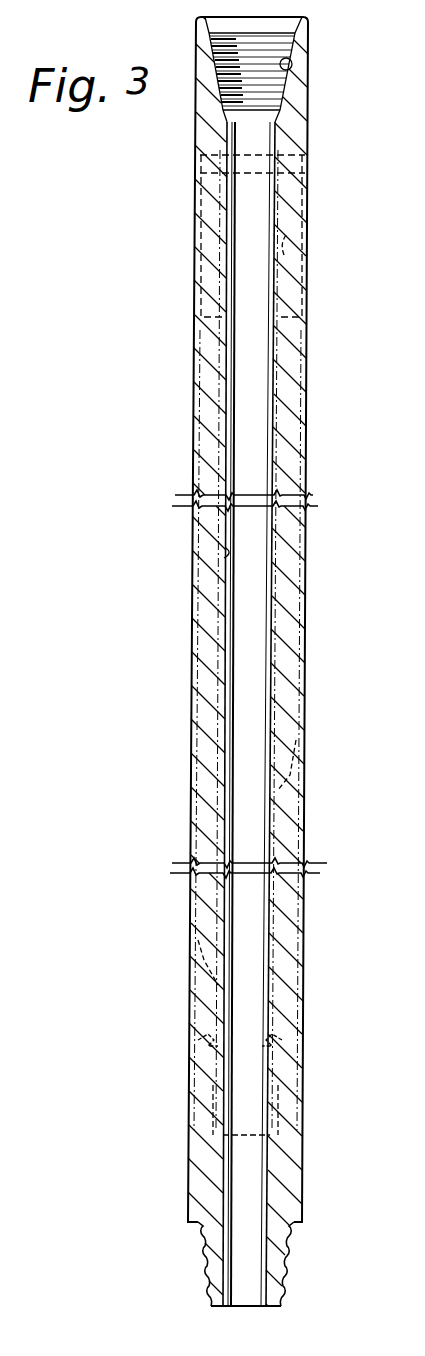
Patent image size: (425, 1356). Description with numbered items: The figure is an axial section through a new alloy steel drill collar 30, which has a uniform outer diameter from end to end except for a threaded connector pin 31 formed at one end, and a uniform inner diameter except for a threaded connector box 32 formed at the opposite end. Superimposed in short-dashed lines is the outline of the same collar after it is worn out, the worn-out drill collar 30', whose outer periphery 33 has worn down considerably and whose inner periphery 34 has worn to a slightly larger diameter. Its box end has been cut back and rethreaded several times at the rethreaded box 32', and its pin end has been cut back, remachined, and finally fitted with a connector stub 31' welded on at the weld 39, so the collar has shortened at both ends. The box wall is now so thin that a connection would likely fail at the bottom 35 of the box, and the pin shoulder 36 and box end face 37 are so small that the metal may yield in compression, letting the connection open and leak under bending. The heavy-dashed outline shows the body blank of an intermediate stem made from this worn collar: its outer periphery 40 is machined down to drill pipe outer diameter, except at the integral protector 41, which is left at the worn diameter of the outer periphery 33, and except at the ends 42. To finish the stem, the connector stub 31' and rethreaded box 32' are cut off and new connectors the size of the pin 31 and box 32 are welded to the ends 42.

The drill collar 30 is at (277, 619).
The worn-out drill collar 30' is at (331, 781).
The threaded connector pin 31 is at (203, 1264).
The connector stub 31' is at (189, 1110).
The threaded connector box 32 is at (285, 69).
The rethreaded box 32' is at (170, 640).
The outer periphery 33 is at (305, 790).
The inner periphery 34 is at (226, 548).
The bottom of the box 35 is at (283, 246).
The pin shoulder 36 is at (190, 1075).
The box end face 37 is at (295, 170).
The weld 39 is at (300, 1044).
The outer periphery of body blank 40 is at (205, 893).
The integral protector 41 is at (305, 715).
The ends of body blank 42 is at (300, 378).